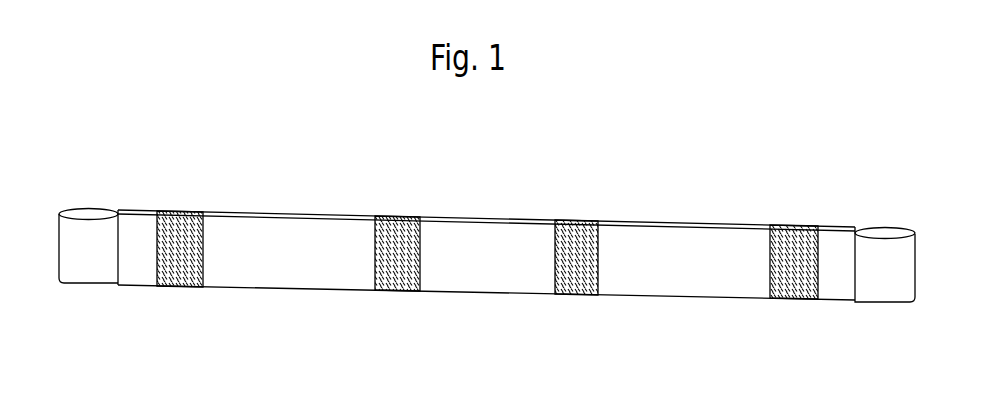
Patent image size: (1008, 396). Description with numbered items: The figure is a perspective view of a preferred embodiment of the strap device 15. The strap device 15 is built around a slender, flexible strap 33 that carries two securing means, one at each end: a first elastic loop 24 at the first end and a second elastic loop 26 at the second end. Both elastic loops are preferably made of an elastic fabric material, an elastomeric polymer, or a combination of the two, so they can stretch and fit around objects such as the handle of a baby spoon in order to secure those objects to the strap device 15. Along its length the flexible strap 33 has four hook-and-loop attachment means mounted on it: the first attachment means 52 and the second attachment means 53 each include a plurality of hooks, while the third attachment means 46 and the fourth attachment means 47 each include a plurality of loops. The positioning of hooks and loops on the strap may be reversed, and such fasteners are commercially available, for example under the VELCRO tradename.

The strap device 15 is at (333, 168).
The first elastic loop 24 is at (76, 208).
The second elastic loop 26 is at (900, 228).
The flexible strap 33 is at (450, 277).
The third attachment means 46 is at (403, 216).
The fourth attachment means 47 is at (573, 221).
The first attachment means 52 is at (175, 211).
The second attachment means 53 is at (800, 225).